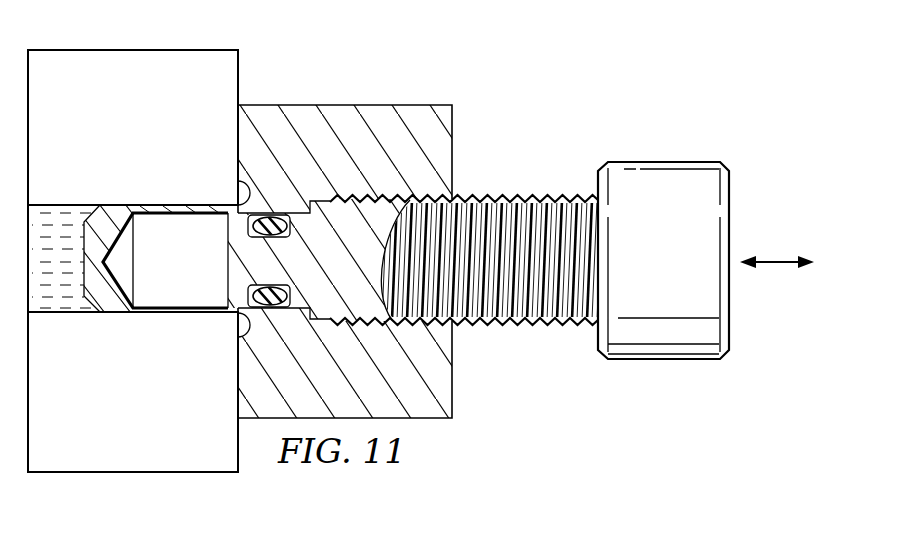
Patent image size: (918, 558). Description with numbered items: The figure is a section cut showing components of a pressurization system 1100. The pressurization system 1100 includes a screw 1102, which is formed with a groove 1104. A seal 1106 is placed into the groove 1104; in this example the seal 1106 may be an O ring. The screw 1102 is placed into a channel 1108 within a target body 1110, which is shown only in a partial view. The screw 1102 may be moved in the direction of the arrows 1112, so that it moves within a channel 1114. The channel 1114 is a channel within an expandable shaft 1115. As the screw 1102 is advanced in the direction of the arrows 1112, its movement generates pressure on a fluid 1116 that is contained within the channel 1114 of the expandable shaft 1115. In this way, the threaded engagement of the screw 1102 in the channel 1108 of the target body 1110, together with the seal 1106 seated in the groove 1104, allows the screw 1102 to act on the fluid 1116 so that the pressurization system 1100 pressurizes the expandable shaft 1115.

The pressurization system 1100 is at (508, 93).
The screw 1102 is at (666, 162).
The groove 1104 is at (242, 276).
The seal 1106 is at (265, 237).
The channel 1108 is at (479, 201).
The target body 1110 is at (292, 105).
The arrows 1112 is at (778, 260).
The channel 1114 is at (207, 213).
The expandable shaft 1115 is at (131, 60).
The fluid 1116 is at (168, 314).